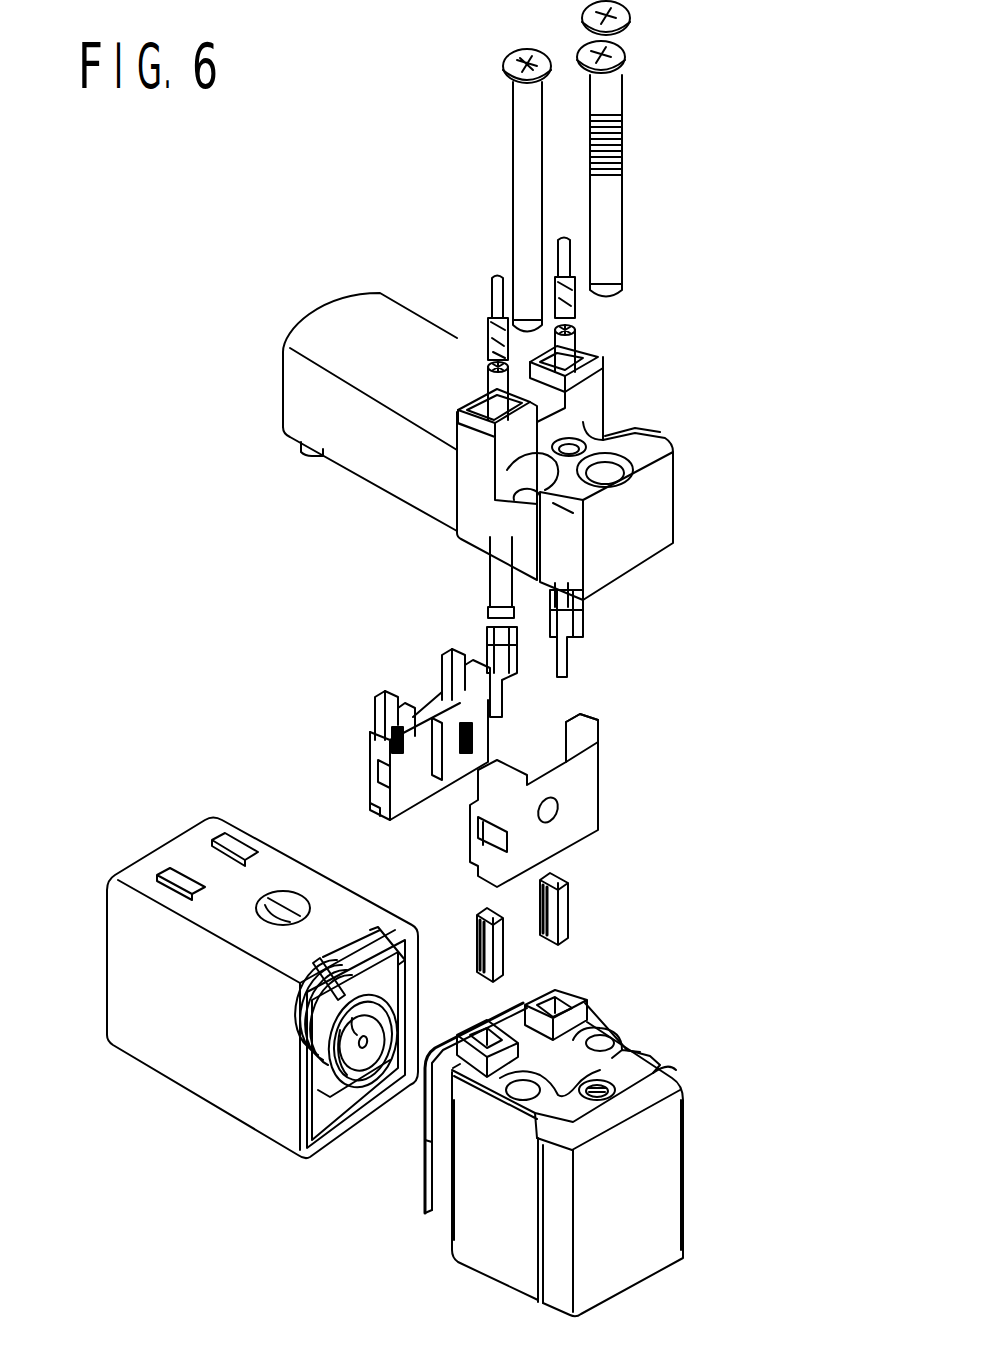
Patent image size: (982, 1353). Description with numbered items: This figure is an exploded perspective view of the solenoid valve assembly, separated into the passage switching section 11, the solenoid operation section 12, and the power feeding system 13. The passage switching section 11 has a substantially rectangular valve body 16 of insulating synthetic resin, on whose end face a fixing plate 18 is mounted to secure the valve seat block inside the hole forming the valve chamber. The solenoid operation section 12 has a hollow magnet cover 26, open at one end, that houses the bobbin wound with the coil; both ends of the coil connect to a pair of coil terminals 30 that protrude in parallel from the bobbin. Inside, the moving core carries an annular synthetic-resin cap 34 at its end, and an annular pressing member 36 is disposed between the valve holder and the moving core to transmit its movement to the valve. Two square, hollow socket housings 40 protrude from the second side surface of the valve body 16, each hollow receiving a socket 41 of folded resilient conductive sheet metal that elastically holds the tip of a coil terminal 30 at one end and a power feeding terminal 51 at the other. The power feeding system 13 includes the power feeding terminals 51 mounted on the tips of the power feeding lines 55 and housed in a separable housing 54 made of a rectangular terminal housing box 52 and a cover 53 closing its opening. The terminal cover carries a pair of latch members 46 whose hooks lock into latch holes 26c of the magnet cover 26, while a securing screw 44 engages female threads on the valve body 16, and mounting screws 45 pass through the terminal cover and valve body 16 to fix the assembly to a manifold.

The passage switching section 11 is at (591, 1166).
The solenoid operation section 12 is at (250, 976).
The power feeding system 13 is at (320, 298).
The valve body 16 is at (493, 1245).
The fixing plate 18 is at (640, 1240).
The magnet cover 26 is at (158, 1043).
The latch holes 26c is at (165, 872).
The coil terminals 30 is at (351, 1026).
The cap 34 is at (337, 1077).
The pressing member 36 is at (360, 1057).
The socket housings 40 is at (472, 1062).
The sockets 41 is at (495, 947).
The securing screw 44 is at (607, 107).
The mounting screws 45 is at (525, 188).
The latch members 46 is at (310, 456).
The power feeding terminals 51 is at (500, 690).
The terminal housing box 52 is at (370, 727).
The cover 53 is at (595, 730).
The housing 54 is at (621, 776).
The power feeding lines 55 is at (498, 380).